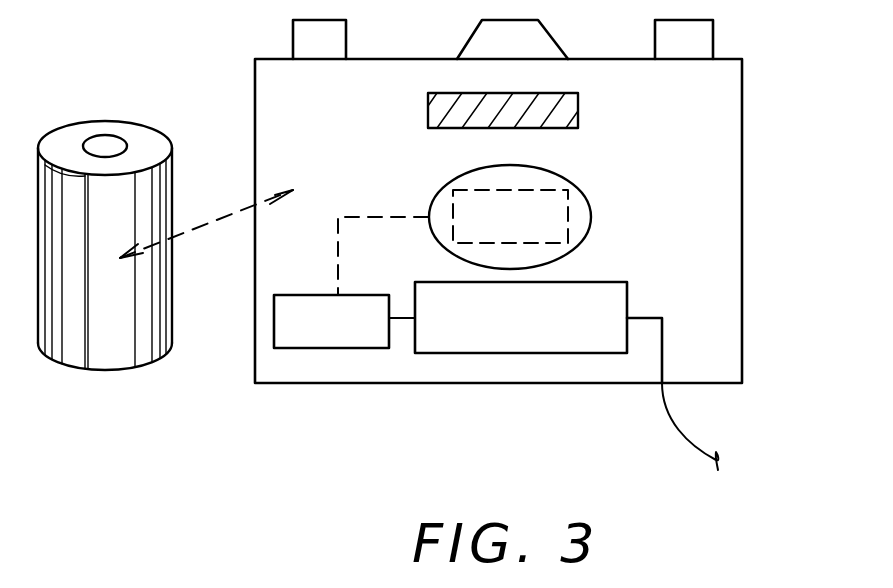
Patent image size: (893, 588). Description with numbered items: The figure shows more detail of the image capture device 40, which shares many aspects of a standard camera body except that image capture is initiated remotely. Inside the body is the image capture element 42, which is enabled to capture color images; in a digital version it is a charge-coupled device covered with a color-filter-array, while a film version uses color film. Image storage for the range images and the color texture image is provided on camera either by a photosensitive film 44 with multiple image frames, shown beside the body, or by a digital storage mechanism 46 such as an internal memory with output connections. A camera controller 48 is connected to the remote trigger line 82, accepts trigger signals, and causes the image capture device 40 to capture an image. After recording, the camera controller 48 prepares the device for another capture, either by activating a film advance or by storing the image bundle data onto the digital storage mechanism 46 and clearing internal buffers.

The image capture device 40 is at (742, 262).
The image capture element 42 is at (581, 206).
The photosensitive film 44 is at (140, 358).
The digital storage mechanism 46 is at (330, 348).
The camera controller 48 is at (508, 353).
The remote trigger line 82 is at (685, 428).